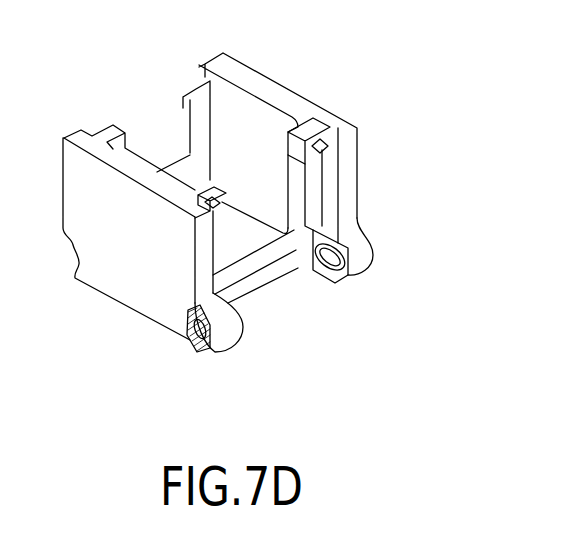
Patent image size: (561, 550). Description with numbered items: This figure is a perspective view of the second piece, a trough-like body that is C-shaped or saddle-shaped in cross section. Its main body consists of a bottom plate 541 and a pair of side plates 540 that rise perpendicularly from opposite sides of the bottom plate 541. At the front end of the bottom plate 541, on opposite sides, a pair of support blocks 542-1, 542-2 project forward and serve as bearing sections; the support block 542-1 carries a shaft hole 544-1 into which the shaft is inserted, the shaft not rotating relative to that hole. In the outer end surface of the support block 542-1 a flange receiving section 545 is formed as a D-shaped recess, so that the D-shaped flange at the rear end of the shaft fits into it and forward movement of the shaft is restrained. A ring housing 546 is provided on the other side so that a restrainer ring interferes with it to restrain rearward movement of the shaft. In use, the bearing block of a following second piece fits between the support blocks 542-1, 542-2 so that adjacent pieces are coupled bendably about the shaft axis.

The side plate 540 is at (223, 53).
The bottom plate 541 is at (270, 287).
The support block 542-1 is at (227, 332).
The support block 542-2 is at (355, 272).
The shaft hole 544-1 is at (213, 353).
The flange receiving section 545 is at (188, 327).
The ring housing 546 is at (348, 247).